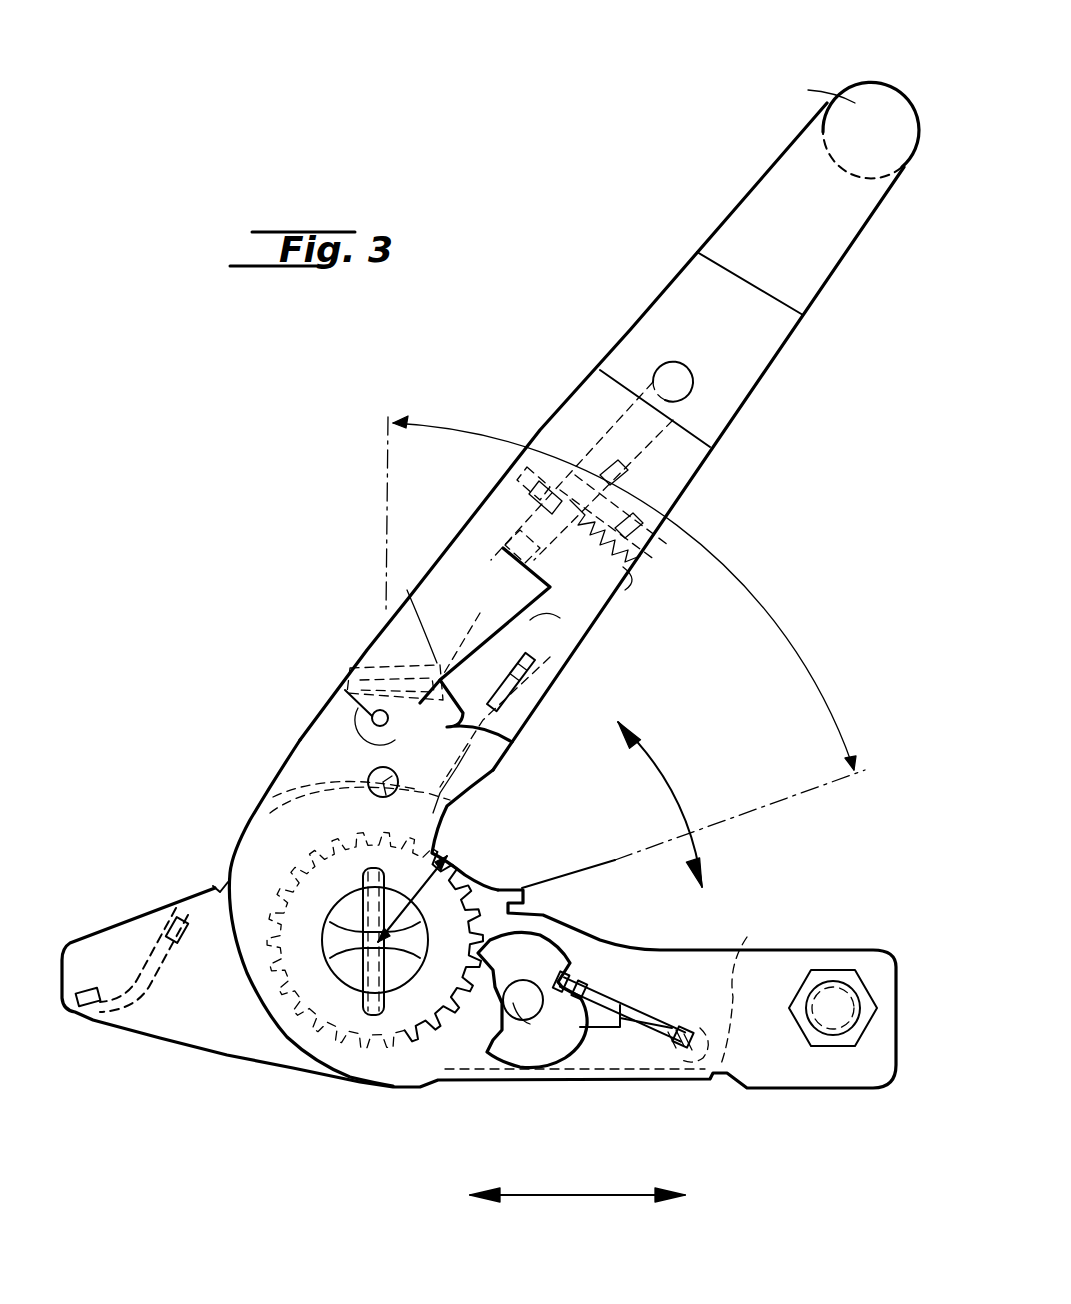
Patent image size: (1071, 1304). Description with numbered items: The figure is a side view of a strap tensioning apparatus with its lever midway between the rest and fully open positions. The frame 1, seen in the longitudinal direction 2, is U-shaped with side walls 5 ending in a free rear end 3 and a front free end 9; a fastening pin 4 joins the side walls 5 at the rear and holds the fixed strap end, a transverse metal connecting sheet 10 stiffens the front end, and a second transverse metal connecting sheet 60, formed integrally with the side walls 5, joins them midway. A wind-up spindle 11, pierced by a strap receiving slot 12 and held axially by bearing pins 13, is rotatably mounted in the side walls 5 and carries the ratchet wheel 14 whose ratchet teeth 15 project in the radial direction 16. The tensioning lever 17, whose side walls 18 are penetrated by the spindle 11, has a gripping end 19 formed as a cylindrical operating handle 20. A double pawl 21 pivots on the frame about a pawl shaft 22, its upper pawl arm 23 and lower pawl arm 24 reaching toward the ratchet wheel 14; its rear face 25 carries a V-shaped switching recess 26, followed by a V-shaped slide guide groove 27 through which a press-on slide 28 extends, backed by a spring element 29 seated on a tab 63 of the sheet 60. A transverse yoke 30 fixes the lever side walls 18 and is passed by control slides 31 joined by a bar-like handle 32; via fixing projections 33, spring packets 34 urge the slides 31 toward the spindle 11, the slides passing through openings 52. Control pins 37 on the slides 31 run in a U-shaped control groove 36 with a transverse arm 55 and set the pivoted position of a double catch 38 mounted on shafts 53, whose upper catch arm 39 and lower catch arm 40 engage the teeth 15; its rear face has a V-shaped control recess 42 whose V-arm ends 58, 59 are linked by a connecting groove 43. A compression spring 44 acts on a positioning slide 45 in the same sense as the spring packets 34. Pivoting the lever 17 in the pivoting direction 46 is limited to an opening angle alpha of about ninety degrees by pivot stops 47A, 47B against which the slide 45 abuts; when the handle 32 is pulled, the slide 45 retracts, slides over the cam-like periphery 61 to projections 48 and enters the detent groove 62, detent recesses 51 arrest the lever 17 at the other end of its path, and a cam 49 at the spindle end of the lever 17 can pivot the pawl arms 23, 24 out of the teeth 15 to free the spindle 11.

The frame 1 is at (790, 948).
The longitudinal direction 2 is at (553, 1195).
The free rear end 3 is at (896, 968).
The fastening pin 4 is at (833, 1015).
The side walls 5 is at (222, 1038).
The front free end 9 is at (60, 968).
The transverse metal connecting sheet 10 is at (145, 947).
The wind-up spindle 11 is at (390, 977).
The strap receiving slot 12 is at (330, 944).
The bearing pins 13 is at (363, 880).
The ratchet wheel 14 is at (425, 1052).
The ratchet teeth 15 is at (513, 884).
The radial direction 16 is at (421, 899).
The tensioning lever 17 is at (730, 210).
The tensioning lever side walls 18 is at (822, 264).
The gripping end 19 is at (880, 80).
The operating handle 20 is at (815, 89).
The double pawl 21 is at (543, 1050).
The pawl shaft 22 is at (512, 1005).
The upper pawl arm 23 is at (487, 950).
The lower pawl arm 24 is at (495, 1052).
The rear face 25 is at (582, 996).
The switching recess 26 is at (582, 955).
The slide guide groove 27 is at (640, 1035).
The press-on slide 28 is at (620, 1013).
The spring element 29 is at (685, 1030).
The transverse yoke 30 is at (630, 545).
The control slides 31 is at (623, 468).
The handle 32 is at (660, 370).
The fixing projections 33 is at (510, 553).
The spring packets 34 is at (530, 513).
The control groove 36 is at (460, 698).
The control pins 37 is at (367, 716).
The double catch 38 is at (320, 762).
The upper catch arm 39 is at (330, 815).
The lower catch arm 40 is at (443, 800).
The control recess 42 is at (350, 668).
The connecting groove 43 is at (358, 660).
The compression spring 44 is at (623, 567).
The positioning slide 45 is at (535, 660).
The pivoting direction 46 is at (645, 747).
The pivot stop 47A is at (260, 798).
The pivot stop 47B is at (693, 829).
The projections 48 is at (216, 885).
The cam 49 is at (375, 1078).
The detent recesses 51 is at (527, 908).
The openings 52 is at (530, 620).
The shafts 53 is at (397, 773).
The transverse arm 55 is at (512, 742).
The V-arm end 58 is at (345, 690).
The V-arm end 59 is at (497, 773).
The transverse metal connecting sheet 60 is at (593, 1072).
The cam-like periphery 61 is at (240, 840).
The detent groove 62 is at (223, 883).
The tab 63 is at (747, 942).
The opening angle alpha is at (621, 593).